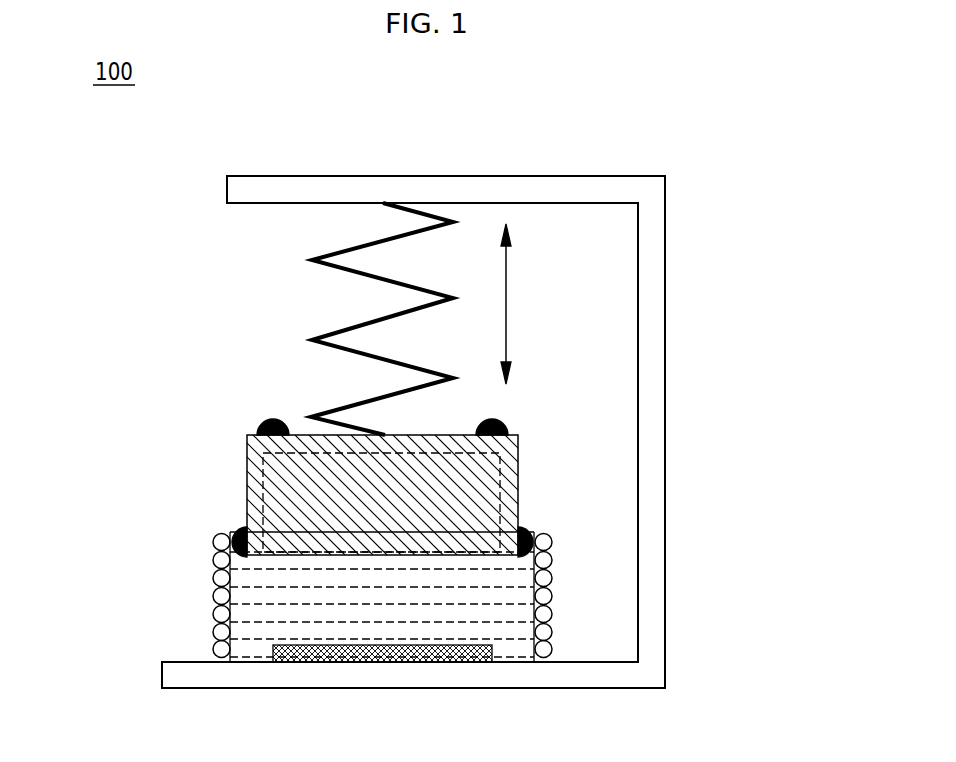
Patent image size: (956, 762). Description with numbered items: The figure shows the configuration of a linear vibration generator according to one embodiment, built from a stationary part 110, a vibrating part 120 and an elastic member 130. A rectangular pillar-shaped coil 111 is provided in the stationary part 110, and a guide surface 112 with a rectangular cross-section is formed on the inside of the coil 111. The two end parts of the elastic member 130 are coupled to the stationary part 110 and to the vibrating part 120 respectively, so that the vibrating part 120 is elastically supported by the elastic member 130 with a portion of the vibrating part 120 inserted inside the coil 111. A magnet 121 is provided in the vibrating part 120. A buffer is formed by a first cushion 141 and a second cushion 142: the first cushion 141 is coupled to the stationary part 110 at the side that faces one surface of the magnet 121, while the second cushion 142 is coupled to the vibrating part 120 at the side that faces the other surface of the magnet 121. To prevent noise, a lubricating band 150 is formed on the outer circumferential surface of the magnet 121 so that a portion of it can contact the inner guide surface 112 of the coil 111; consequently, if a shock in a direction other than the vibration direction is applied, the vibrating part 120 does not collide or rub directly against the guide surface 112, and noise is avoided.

The stationary part 110 is at (665, 272).
The coil 111 is at (220, 577).
The guide surface 112 is at (536, 654).
The vibrating part 120 is at (520, 452).
The magnet 121 is at (495, 499).
The elastic member 130 is at (334, 327).
The first cushion 141 is at (352, 663).
The second cushion 142 is at (264, 421).
The lubricating band 150 is at (243, 530).